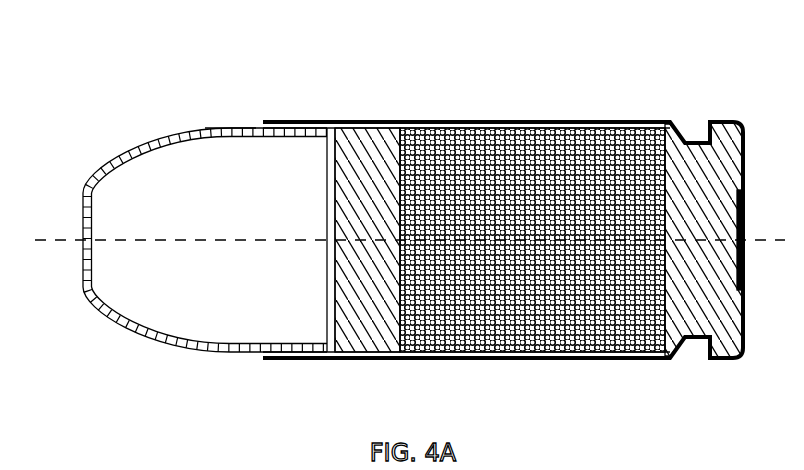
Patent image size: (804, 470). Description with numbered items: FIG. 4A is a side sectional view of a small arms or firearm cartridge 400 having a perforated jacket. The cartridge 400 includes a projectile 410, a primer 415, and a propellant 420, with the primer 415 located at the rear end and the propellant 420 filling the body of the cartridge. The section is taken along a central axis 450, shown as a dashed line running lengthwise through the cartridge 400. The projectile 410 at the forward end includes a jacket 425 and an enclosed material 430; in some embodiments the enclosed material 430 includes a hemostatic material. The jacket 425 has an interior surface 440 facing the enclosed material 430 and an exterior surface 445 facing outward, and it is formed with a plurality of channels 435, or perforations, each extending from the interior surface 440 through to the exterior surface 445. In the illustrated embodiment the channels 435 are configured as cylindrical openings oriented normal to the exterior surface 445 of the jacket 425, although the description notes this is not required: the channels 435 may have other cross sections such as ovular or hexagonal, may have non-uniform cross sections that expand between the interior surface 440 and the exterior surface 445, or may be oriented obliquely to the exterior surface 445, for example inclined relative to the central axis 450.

The small arms or firearm cartridge 400 is at (410, 216).
The projectile 410 is at (182, 209).
The primer 415 is at (742, 217).
The propellant 420 is at (461, 127).
The jacket 425 is at (120, 158).
The enclosed material 430 is at (242, 333).
The channel 435 is at (253, 129).
The interior surface 440 is at (141, 322).
The exterior surface 445 is at (102, 306).
The central axis 450 is at (68, 239).